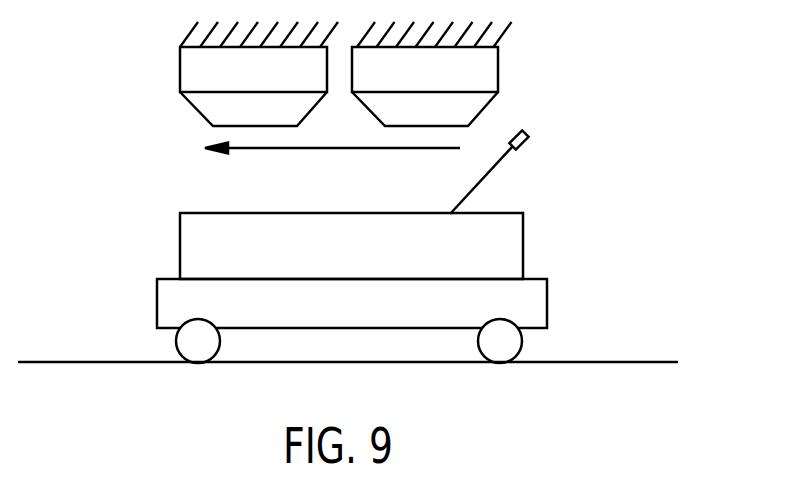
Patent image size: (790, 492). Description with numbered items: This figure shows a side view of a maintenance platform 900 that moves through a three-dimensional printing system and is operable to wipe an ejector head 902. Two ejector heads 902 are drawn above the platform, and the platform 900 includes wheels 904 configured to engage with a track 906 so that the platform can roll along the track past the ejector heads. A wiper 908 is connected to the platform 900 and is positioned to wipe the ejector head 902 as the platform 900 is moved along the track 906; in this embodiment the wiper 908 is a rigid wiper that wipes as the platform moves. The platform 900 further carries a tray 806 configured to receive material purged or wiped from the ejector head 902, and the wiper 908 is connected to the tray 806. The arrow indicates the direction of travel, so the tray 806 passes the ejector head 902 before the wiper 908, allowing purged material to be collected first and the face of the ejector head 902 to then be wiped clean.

The maintenance platform 900 is at (582, 291).
The ejector head 902 is at (187, 27).
The wheels 904 is at (218, 332).
The track 906 is at (82, 362).
The wiper 908 is at (497, 167).
The tray 806 is at (192, 212).